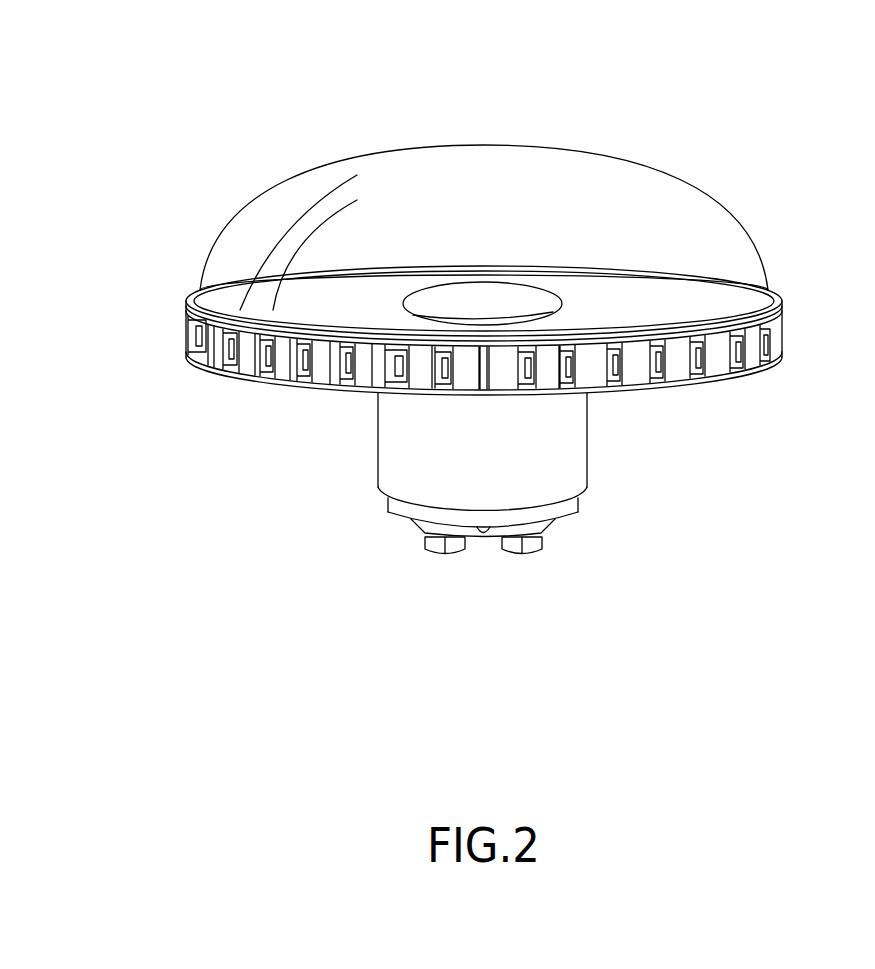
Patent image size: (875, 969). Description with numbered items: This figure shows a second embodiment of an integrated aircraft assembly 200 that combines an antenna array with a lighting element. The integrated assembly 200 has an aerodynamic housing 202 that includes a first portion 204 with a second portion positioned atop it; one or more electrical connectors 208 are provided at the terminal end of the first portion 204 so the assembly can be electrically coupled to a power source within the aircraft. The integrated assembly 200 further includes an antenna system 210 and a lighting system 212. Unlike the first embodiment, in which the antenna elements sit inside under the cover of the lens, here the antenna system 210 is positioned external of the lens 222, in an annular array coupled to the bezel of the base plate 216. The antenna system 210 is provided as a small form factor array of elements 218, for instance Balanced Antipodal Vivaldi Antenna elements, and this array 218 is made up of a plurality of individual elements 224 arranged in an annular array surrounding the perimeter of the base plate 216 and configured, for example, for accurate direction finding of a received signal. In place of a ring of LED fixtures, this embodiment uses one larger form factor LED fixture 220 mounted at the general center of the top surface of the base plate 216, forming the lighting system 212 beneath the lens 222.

The integrated assembly 200 is at (158, 72).
The aerodynamic housing 202 is at (366, 430).
The first portion 204 is at (593, 449).
The electrical connectors 208 is at (528, 543).
The antenna system 210 is at (236, 383).
The lighting system 212 is at (420, 283).
The base plate 216 is at (755, 305).
The array of elements 218 is at (166, 322).
The LED fixture 220 is at (528, 297).
The lens 222 is at (613, 172).
The individual elements 224 is at (684, 362).